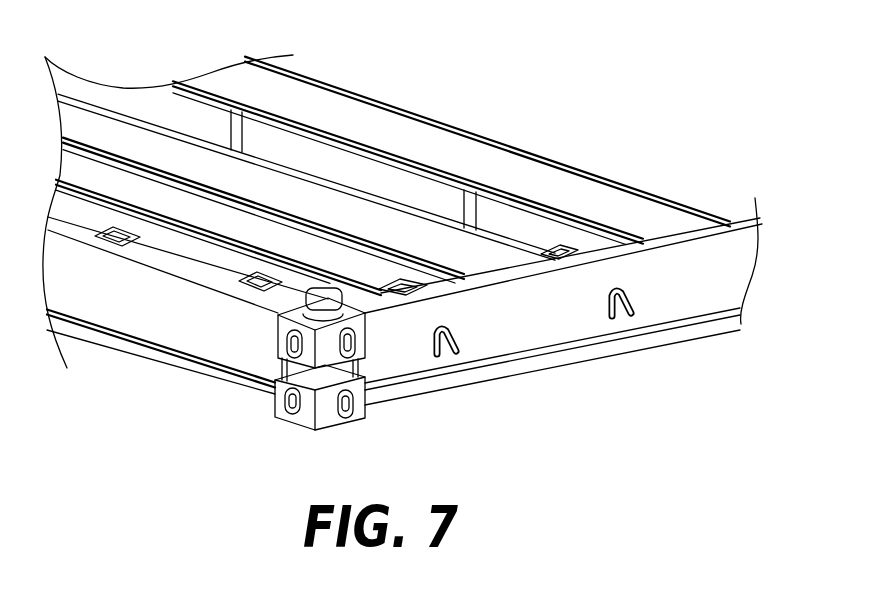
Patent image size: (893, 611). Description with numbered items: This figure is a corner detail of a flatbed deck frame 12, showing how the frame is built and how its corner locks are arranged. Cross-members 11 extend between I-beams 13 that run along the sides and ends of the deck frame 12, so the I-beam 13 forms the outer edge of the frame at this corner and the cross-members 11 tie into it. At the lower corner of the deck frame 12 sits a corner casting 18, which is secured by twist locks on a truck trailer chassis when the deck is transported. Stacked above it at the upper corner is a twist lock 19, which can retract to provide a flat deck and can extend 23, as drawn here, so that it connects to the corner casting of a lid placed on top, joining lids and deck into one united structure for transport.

The cross-member 11 is at (631, 226).
The flatbed deck frame 12 is at (587, 366).
The I-beam 13 is at (727, 282).
The corner casting 18 is at (300, 428).
The twist lock 19 is at (277, 335).
The extend 23 is at (367, 310).